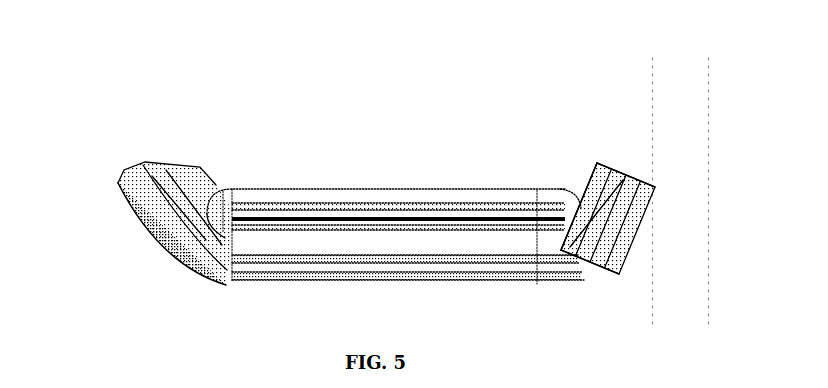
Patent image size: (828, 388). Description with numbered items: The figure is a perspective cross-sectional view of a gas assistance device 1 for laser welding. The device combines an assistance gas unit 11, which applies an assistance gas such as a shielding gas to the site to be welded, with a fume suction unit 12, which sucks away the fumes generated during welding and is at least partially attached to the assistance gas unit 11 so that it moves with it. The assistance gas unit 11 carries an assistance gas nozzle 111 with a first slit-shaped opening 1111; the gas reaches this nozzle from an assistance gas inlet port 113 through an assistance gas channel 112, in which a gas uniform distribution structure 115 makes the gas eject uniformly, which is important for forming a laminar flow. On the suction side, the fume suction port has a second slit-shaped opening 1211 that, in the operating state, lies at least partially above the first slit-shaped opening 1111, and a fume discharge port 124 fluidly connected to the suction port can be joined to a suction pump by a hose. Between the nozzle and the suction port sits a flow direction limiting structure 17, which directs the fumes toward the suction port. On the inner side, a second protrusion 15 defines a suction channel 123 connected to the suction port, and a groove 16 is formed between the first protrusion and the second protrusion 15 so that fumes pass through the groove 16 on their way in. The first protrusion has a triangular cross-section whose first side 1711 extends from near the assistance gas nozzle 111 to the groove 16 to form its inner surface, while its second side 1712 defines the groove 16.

The gas assistance device 1 is at (112, 146).
The assistance gas unit 11 is at (147, 235).
The assistance gas nozzle 111 is at (565, 258).
The first slit-shaped opening 1111 is at (366, 262).
The assistance gas channel 112 is at (180, 208).
The assistance gas inlet port 113 is at (122, 178).
The gas uniform distribution structure 115 is at (151, 215).
The fume suction unit 12 is at (344, 218).
The second slit-shaped opening 1211 is at (408, 223).
The suction channel 123 is at (173, 180).
The fume discharge port 124 is at (603, 164).
The second protrusion 15 is at (206, 212).
The groove 16 is at (578, 220).
The flow direction limiting structure 17 is at (576, 240).
The first side 1711 is at (547, 247).
The second side 1712 is at (577, 213).